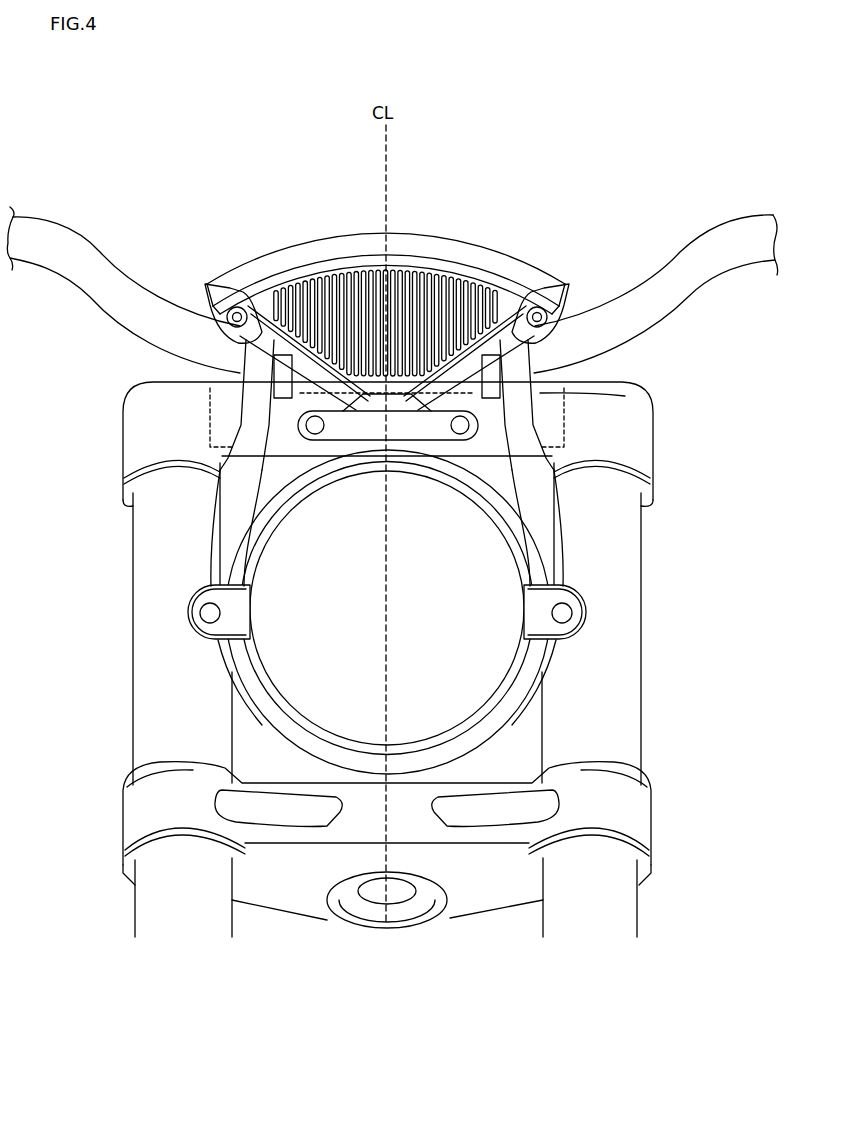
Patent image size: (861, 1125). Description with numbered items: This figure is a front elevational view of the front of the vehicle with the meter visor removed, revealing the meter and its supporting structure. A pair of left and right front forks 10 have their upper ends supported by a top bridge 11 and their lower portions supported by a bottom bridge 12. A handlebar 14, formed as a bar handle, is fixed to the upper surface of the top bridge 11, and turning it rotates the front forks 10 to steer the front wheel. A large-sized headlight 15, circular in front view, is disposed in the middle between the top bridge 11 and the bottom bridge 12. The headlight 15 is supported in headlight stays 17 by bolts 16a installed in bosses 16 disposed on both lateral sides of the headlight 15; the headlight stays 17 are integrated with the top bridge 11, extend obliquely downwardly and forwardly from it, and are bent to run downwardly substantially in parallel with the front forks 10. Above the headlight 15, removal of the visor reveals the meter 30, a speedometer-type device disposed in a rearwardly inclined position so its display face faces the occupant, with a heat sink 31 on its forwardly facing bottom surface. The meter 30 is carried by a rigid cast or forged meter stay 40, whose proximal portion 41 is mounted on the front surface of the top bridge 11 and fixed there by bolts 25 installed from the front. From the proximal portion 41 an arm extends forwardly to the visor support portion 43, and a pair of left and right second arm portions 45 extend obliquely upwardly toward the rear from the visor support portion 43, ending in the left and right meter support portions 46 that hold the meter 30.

The front forks 10 is at (157, 898).
The top bridge 11 is at (140, 440).
The bottom bridge 12 is at (130, 805).
The handlebar 14 is at (86, 238).
The headlight 15 is at (317, 632).
The bosses 16 is at (215, 587).
The bolts 16a is at (207, 620).
The headlight stay 17 is at (245, 440).
The bolts 25 is at (250, 418).
The meter 30 is at (323, 248).
The heat sink 31 is at (399, 268).
The meter stay 40 is at (577, 396).
The proximal portion 41 is at (355, 437).
The visor support portion 43 is at (438, 272).
The second arm portions 45 is at (280, 270).
The meter support portions 46 is at (208, 282).